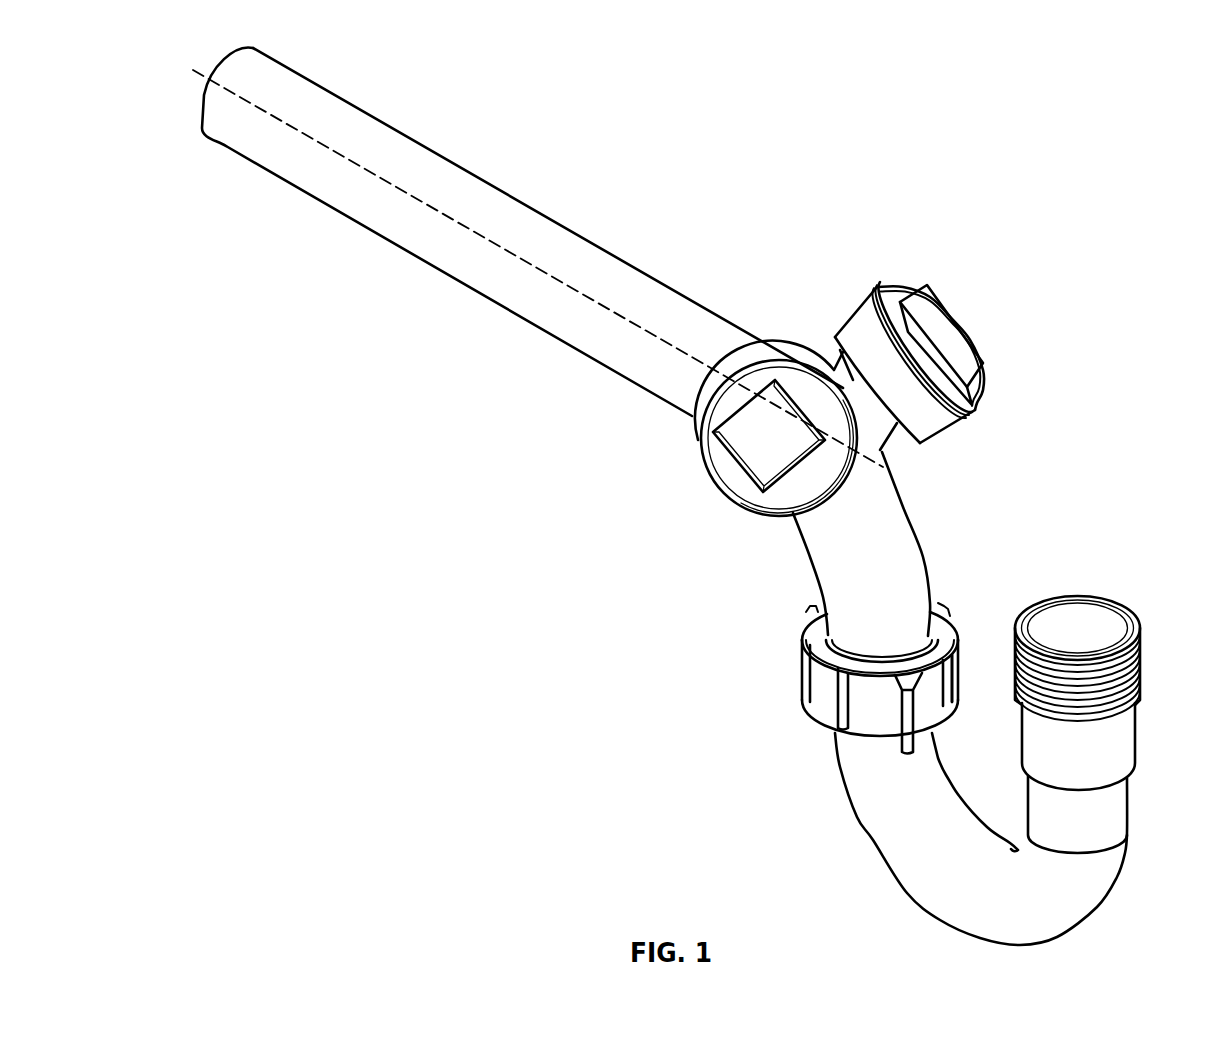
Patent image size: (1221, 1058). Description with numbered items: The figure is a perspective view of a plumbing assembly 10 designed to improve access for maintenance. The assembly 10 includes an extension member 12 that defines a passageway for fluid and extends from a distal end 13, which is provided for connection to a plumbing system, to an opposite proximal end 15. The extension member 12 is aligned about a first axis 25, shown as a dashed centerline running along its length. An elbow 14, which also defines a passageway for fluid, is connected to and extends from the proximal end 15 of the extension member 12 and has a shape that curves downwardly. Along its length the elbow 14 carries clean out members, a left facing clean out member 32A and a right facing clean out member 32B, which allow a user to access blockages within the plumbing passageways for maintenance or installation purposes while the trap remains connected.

The plumbing assembly 10 is at (1083, 108).
The extension member 12 is at (537, 227).
The distal end 13 is at (215, 75).
The elbow 14 is at (895, 527).
The proximal end 15 is at (762, 340).
The first axis 25 is at (283, 127).
The left facing clean out member 32A is at (713, 468).
The right facing clean out member 32B is at (953, 318).